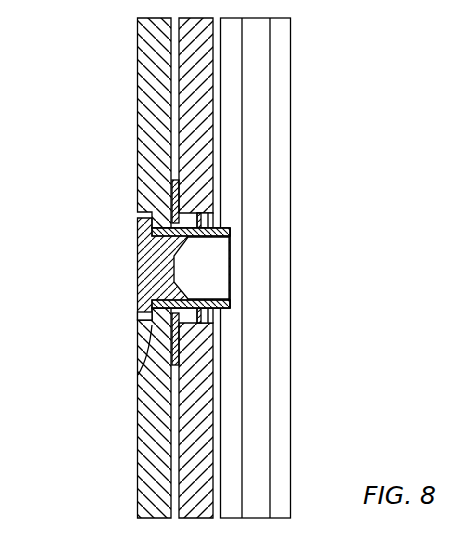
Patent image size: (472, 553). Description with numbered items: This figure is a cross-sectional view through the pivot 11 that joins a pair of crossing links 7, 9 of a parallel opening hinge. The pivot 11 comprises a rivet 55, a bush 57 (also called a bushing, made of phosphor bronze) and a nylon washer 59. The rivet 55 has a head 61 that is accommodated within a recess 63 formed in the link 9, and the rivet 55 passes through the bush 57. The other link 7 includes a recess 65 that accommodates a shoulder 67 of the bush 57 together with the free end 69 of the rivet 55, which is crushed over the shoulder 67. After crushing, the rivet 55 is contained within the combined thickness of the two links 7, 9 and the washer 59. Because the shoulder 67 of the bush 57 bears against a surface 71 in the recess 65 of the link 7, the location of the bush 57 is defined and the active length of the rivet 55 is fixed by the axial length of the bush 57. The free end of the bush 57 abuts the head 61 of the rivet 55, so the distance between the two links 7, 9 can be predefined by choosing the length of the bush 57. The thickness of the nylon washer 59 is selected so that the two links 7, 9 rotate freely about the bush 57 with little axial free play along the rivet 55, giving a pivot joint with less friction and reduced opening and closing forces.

The crossing link 7 is at (190, 497).
The crossing link 9 is at (152, 68).
The pivot 11 is at (95, 217).
The rivet 55 is at (193, 314).
The bush 57 is at (150, 236).
The nylon washer 59 is at (183, 357).
The head 61 is at (150, 313).
The recess 63 is at (138, 375).
The recess 65 is at (213, 218).
The shoulder 67 is at (213, 222).
The free end 69 is at (229, 299).
The surface 71 is at (207, 322).